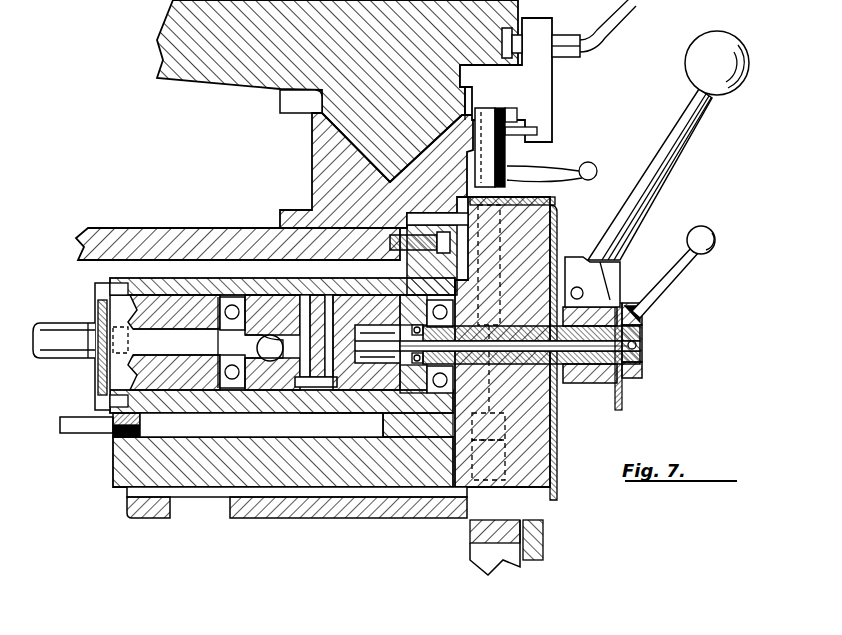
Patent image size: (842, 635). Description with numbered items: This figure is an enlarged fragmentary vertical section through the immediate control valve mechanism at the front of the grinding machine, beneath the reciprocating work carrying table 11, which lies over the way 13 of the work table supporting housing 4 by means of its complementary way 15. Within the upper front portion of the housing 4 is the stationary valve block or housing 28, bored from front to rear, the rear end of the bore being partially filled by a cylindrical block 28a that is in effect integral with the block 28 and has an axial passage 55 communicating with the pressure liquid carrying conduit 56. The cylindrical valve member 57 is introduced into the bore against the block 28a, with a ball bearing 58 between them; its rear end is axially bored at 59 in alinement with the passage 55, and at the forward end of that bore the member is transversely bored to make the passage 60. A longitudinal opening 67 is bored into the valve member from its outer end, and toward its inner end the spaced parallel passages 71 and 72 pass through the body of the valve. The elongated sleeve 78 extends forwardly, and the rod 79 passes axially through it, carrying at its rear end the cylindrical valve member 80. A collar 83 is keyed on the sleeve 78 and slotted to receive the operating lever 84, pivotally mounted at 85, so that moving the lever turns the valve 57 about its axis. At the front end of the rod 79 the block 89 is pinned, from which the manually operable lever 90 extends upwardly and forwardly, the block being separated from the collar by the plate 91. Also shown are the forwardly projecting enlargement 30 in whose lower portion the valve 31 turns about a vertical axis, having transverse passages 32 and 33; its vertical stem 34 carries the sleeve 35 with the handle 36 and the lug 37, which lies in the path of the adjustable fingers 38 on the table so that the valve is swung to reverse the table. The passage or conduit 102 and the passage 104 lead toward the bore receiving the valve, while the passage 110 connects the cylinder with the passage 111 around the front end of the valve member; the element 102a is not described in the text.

The work table supporting housing 4 is at (96, 228).
The reciprocating work carrying table 11 is at (218, 68).
The way 13 is at (380, 143).
The complementary way 15 is at (318, 120).
The valve block or housing 28 is at (178, 337).
The cylindrical block 28a is at (133, 317).
The forwardly projecting enlargement 30 is at (537, 434).
The valve 31 is at (540, 455).
The transverse passage 32 is at (555, 448).
The transverse passage 33 is at (486, 548).
The vertical stem 34 is at (505, 193).
The sleeve 35 is at (507, 158).
The handle 36 is at (567, 173).
The lug 37 is at (535, 133).
The fingers 38 is at (543, 84).
The axial passage 55 is at (160, 338).
The pressure liquid carrying pipe or conduit 56 is at (70, 355).
The cylindrical valve member 57 is at (270, 355).
The ball bearing 58 is at (232, 323).
The axial bore 59 is at (235, 347).
The transverse passage 60 is at (262, 340).
The longitudinal opening 67 is at (318, 387).
The passage 71 is at (332, 300).
The passage 72 is at (300, 298).
The elongated sleeve 78 is at (585, 383).
The rod 79 is at (638, 348).
The cylindrical valve member 80 is at (382, 327).
The collar 83 is at (640, 320).
The operating lever 84 is at (660, 196).
The pivot 85 is at (581, 290).
The block 89 is at (622, 378).
The manually operable lever 90 is at (672, 280).
The plate 91 is at (559, 385).
The passage or conduit 102 is at (173, 430).
The rod 102a is at (82, 433).
The passage 104 is at (343, 420).
The passage 110 is at (420, 365).
The passage 111 is at (395, 420).